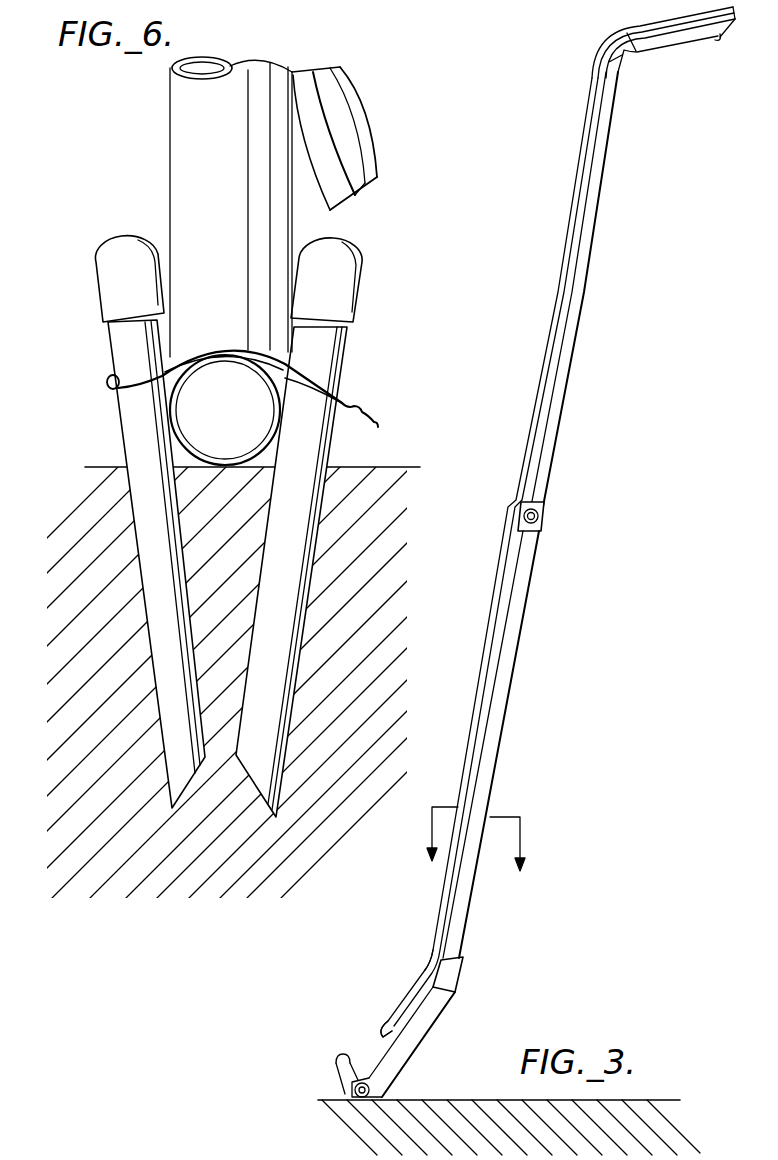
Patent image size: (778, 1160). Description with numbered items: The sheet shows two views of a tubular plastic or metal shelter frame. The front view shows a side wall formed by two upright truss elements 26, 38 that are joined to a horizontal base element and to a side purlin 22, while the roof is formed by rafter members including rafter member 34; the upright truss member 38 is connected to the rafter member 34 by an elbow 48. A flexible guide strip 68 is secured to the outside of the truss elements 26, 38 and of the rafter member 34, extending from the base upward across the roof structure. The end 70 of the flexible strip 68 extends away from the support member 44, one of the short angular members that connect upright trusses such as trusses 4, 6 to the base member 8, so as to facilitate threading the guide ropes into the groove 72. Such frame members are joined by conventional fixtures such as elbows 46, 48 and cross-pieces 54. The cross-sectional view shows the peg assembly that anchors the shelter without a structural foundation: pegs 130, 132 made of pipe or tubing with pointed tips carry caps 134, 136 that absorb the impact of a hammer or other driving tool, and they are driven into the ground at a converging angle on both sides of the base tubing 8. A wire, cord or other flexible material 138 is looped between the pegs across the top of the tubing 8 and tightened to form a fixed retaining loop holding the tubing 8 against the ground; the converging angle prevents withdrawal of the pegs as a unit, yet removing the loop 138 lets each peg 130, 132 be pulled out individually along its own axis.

In FIG. 6, the upright truss 6 is at (237, 177).
In FIG. 6, the base member 8 is at (180, 401).
In FIG. 6, the flexible guide strip 68 is at (340, 85).
In FIG. 3, the flexible guide strip 68 is at (553, 310).
In FIG. 6, the peg 130 is at (110, 360).
In FIG. 6, the peg 132 is at (345, 358).
In FIG. 6, the cap 134 is at (95, 282).
In FIG. 6, the cap 136 is at (362, 287).
In FIG. 6, the retaining loop 138 is at (137, 395).
In FIG. 3, the rafter member 34 is at (700, 45).
In FIG. 3, the upright truss member 38 is at (592, 270).
In FIG. 3, the elbow 48 is at (630, 65).
In FIG. 3, the side purlin 22 is at (540, 525).
In FIG. 3, the cross-pieces 54 is at (547, 512).
In FIG. 3, the upright truss 26 is at (508, 707).
In FIG. 3, the upright truss 4 is at (465, 852).
In FIG. 3, the groove 72 is at (425, 967).
In FIG. 3, the end of the flexible strip 70 is at (403, 1000).
In FIG. 3, the short angular member 44 is at (428, 1022).
In FIG. 3, the elbow 46 is at (382, 1090).